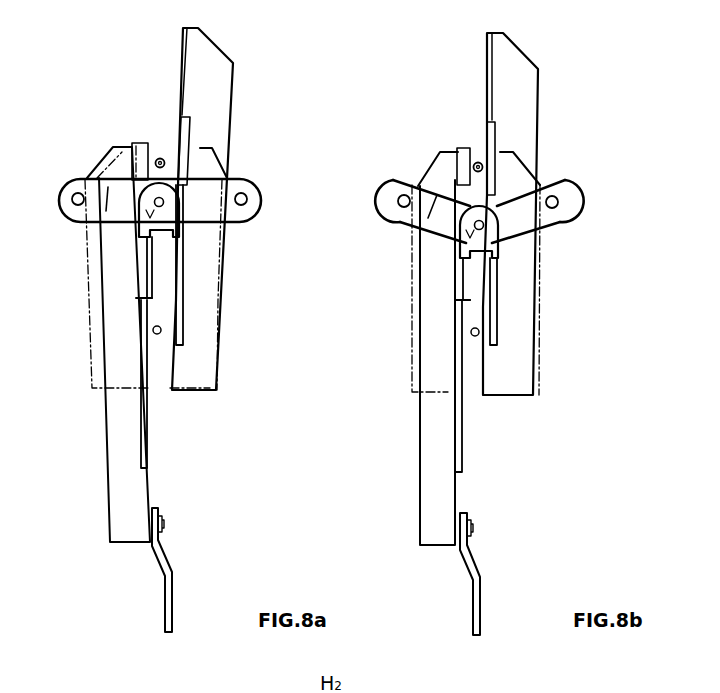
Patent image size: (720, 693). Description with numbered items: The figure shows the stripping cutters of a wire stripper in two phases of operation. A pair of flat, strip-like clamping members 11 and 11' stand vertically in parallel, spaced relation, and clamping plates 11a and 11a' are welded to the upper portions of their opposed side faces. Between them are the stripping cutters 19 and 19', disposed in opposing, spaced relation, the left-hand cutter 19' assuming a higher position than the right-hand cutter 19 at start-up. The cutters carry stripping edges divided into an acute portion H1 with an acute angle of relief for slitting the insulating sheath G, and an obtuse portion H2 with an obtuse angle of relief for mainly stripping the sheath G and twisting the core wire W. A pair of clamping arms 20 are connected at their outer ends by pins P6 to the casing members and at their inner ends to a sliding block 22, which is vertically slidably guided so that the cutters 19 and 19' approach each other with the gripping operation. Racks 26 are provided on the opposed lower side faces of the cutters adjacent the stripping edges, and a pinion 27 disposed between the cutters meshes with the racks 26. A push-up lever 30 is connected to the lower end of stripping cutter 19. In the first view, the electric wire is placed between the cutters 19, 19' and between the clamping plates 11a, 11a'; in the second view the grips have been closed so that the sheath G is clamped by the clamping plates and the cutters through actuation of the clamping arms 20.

In FIG. 8A, the clamping member 11 is at (232, 269).
In FIG. 8B, the clamping member 11 is at (545, 273).
In FIG. 8A, the clamping member 11' is at (86, 267).
In FIG. 8B, the clamping member 11' is at (405, 272).
In FIG. 8A, the clamping plate 11a is at (236, 147).
In FIG. 8B, the clamping plate 11a is at (541, 138).
In FIG. 8A, the clamping plate 11a' is at (99, 123).
In FIG. 8B, the clamping plate 11a' is at (431, 134).
In FIG. 8A, the stripping cutter 19 is at (86, 344).
In FIG. 8B, the stripping cutter 19 is at (416, 362).
In FIG. 8A, the stripping cutter 19' is at (228, 209).
In FIG. 8B, the stripping cutter 19' is at (539, 214).
In FIG. 8A, the clamping arm 20 is at (72, 185).
In FIG. 8B, the clamping arm 20 is at (393, 197).
In FIG. 8A, the sliding block 22 is at (172, 227).
In FIG. 8B, the sliding block 22 is at (484, 247).
In FIG. 8A, the rack 26 is at (184, 293).
In FIG. 8B, the rack 26 is at (498, 300).
In FIG. 8A, the pinion 27 is at (178, 312).
In FIG. 8B, the pinion 27 is at (478, 358).
In FIG. 8A, the push-up lever 30 is at (172, 603).
In FIG. 8B, the push-up lever 30 is at (478, 605).
In FIG. 8A, the insulating sheath G is at (159, 157).
In FIG. 8B, the insulating sheath G is at (477, 162).
In FIG. 8A, the core wire W is at (146, 148).
In FIG. 8B, the acute portion H1 is at (467, 178).
In FIG. 8A, the obtuse portion H2 is at (181, 52).
In FIG. 8B, the obtuse portion H2 is at (486, 65).
In FIG. 8A, the pin P6 is at (71, 200).